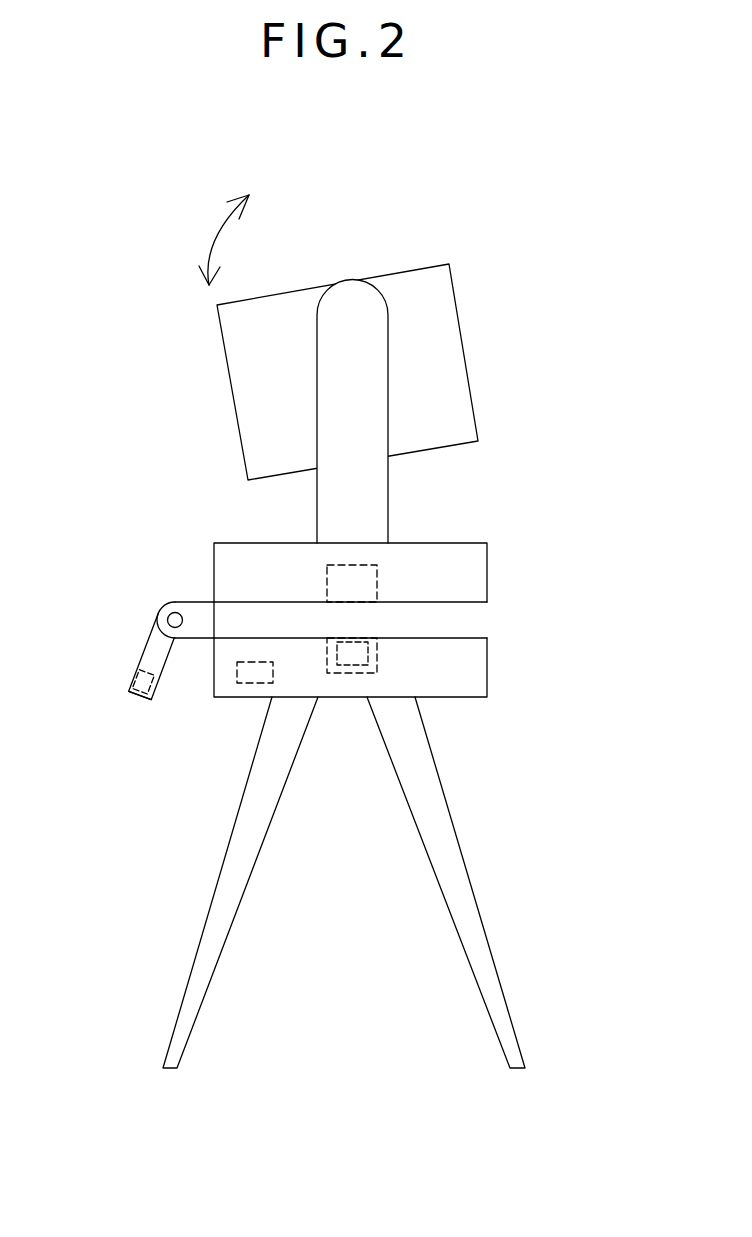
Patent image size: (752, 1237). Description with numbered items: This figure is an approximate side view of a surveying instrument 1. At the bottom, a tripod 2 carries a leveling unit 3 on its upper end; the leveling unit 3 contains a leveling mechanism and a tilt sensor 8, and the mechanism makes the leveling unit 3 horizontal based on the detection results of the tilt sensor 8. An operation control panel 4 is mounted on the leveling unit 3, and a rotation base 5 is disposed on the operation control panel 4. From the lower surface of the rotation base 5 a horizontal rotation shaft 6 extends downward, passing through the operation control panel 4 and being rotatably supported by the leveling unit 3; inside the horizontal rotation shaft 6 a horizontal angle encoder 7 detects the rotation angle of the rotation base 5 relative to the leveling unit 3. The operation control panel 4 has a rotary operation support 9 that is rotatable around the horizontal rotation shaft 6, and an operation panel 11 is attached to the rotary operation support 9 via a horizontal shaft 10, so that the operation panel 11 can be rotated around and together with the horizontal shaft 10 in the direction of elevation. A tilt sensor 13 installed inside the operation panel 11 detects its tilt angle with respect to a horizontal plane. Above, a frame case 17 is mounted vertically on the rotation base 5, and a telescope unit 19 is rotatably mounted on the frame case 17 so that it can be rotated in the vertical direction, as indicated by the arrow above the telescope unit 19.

The surveying instrument 1 is at (316, 614).
The tripod 2 is at (463, 851).
The leveling unit 3 is at (487, 674).
The operation control panel 4 is at (487, 618).
The rotation base 5 is at (487, 562).
The horizontal rotation shaft 6 is at (377, 582).
The horizontal angle encoder 7 is at (345, 667).
The tilt sensor 8 is at (242, 685).
The rotary operation support 9 is at (195, 600).
The horizontal shaft 10 is at (158, 608).
The operation panel 11 is at (137, 697).
The tilt sensor 13 is at (135, 673).
The frame case 17 is at (388, 482).
The telescope unit 19 is at (465, 350).